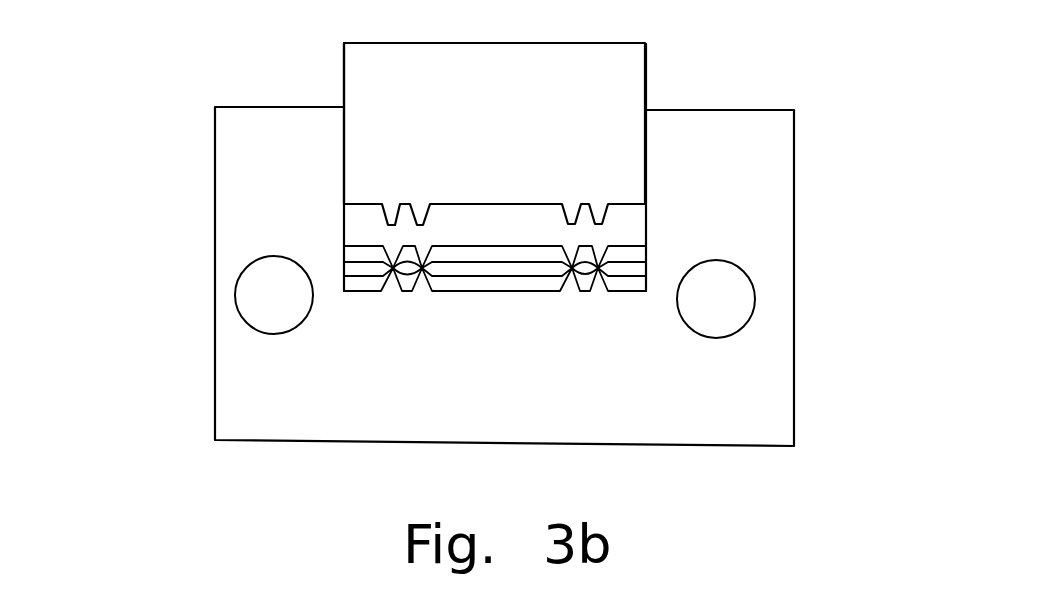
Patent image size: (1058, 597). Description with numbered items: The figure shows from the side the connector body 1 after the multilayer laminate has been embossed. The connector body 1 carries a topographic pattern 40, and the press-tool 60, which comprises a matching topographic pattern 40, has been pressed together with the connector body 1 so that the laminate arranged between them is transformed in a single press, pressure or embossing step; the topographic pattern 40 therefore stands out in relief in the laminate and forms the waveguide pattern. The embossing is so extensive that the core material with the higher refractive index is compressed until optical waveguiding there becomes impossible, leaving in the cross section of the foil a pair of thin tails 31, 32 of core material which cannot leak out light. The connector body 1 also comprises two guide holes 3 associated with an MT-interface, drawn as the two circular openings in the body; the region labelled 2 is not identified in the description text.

The connector body 1 is at (487, 225).
The base body 2 is at (760, 188).
The guide holes 3 is at (723, 307).
The tail 31 is at (392, 270).
The tail 32 is at (423, 270).
The topographic pattern 40 is at (395, 205).
The press-tool 60 is at (591, 115).